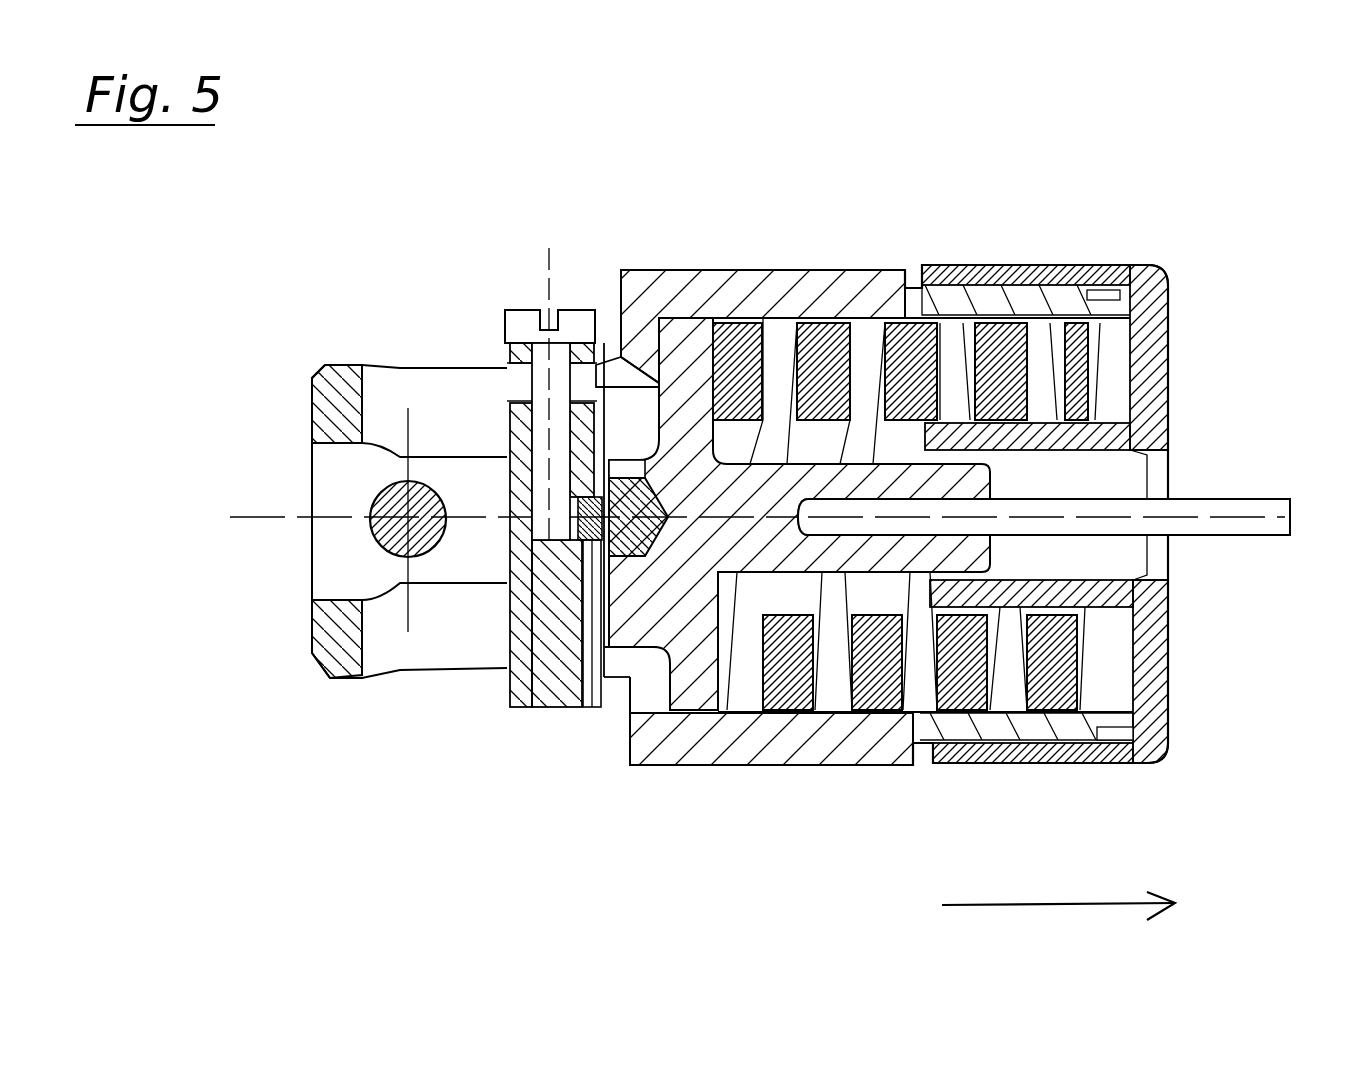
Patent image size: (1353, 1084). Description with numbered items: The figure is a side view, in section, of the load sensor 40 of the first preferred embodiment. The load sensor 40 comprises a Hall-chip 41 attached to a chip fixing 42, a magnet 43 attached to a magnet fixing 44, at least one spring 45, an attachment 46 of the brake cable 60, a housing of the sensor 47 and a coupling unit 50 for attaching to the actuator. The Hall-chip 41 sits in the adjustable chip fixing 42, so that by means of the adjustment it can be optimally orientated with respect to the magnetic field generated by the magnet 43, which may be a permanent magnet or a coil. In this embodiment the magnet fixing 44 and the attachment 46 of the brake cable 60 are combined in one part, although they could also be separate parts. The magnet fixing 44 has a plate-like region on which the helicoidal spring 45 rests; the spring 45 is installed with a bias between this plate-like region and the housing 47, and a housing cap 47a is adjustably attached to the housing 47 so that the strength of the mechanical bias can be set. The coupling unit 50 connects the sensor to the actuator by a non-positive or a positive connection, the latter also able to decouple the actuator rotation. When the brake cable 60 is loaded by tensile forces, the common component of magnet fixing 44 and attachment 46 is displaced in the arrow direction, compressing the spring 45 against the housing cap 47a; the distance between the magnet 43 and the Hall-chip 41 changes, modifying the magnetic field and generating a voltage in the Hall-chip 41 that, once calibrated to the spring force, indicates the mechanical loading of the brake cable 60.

The load sensor 40 is at (1308, 120).
The Hall-chip 41 is at (598, 710).
The chip fixing 42 is at (548, 710).
The magnet 43 is at (628, 480).
The magnet fixing 44 is at (680, 430).
The spring 45 is at (1090, 362).
The attachment of the brake cable 46 is at (841, 545).
The housing of the sensor 47 is at (940, 267).
The housing cap 47a is at (1050, 267).
The coupling unit 50 is at (372, 673).
The brake cable 60 is at (1262, 517).